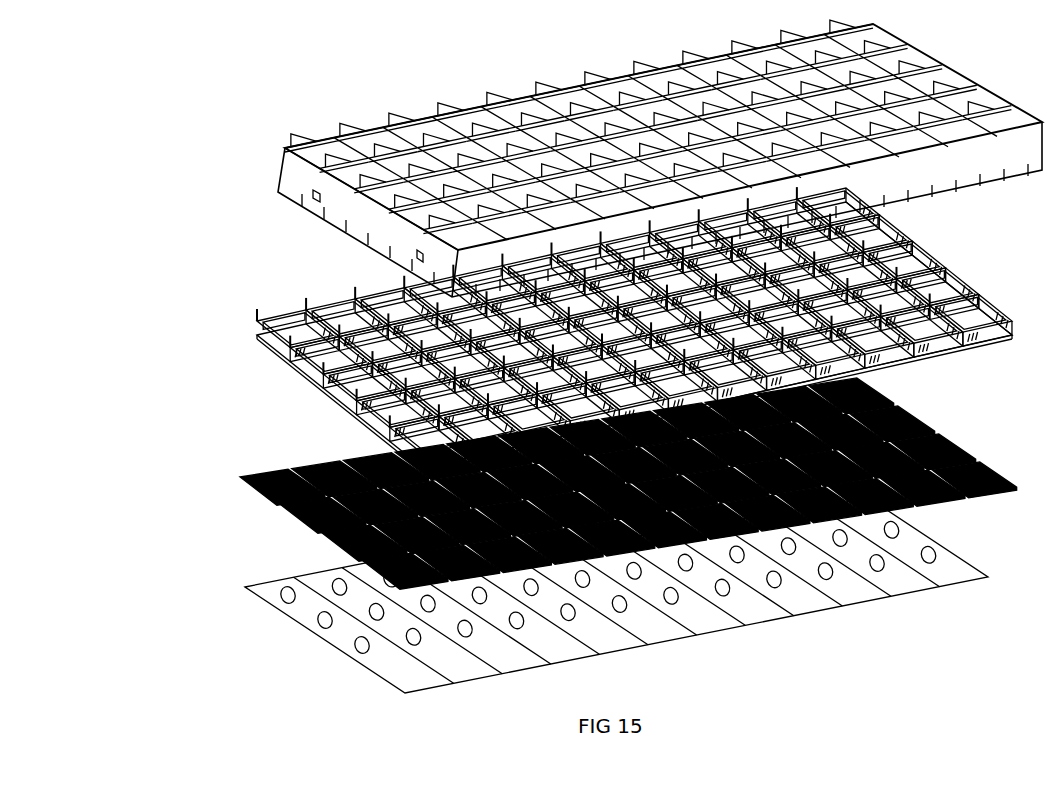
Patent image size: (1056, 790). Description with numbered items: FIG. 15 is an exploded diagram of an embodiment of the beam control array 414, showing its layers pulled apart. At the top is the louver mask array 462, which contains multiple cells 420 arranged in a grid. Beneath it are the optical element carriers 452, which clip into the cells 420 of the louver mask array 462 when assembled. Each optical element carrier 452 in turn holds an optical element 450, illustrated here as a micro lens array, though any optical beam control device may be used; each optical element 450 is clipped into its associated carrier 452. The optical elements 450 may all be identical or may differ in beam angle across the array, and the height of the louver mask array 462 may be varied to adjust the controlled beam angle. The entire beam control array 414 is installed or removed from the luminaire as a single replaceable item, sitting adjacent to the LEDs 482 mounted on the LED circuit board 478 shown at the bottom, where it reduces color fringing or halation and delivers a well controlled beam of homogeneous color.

The beam control array 414 is at (624, 158).
The cells 420 is at (327, 158).
The louver mask array 462 is at (292, 176).
The optical element carriers 452 is at (258, 334).
The optical elements 450 is at (238, 480).
The LED circuit board 478 is at (575, 582).
The LEDs 482 is at (316, 620).